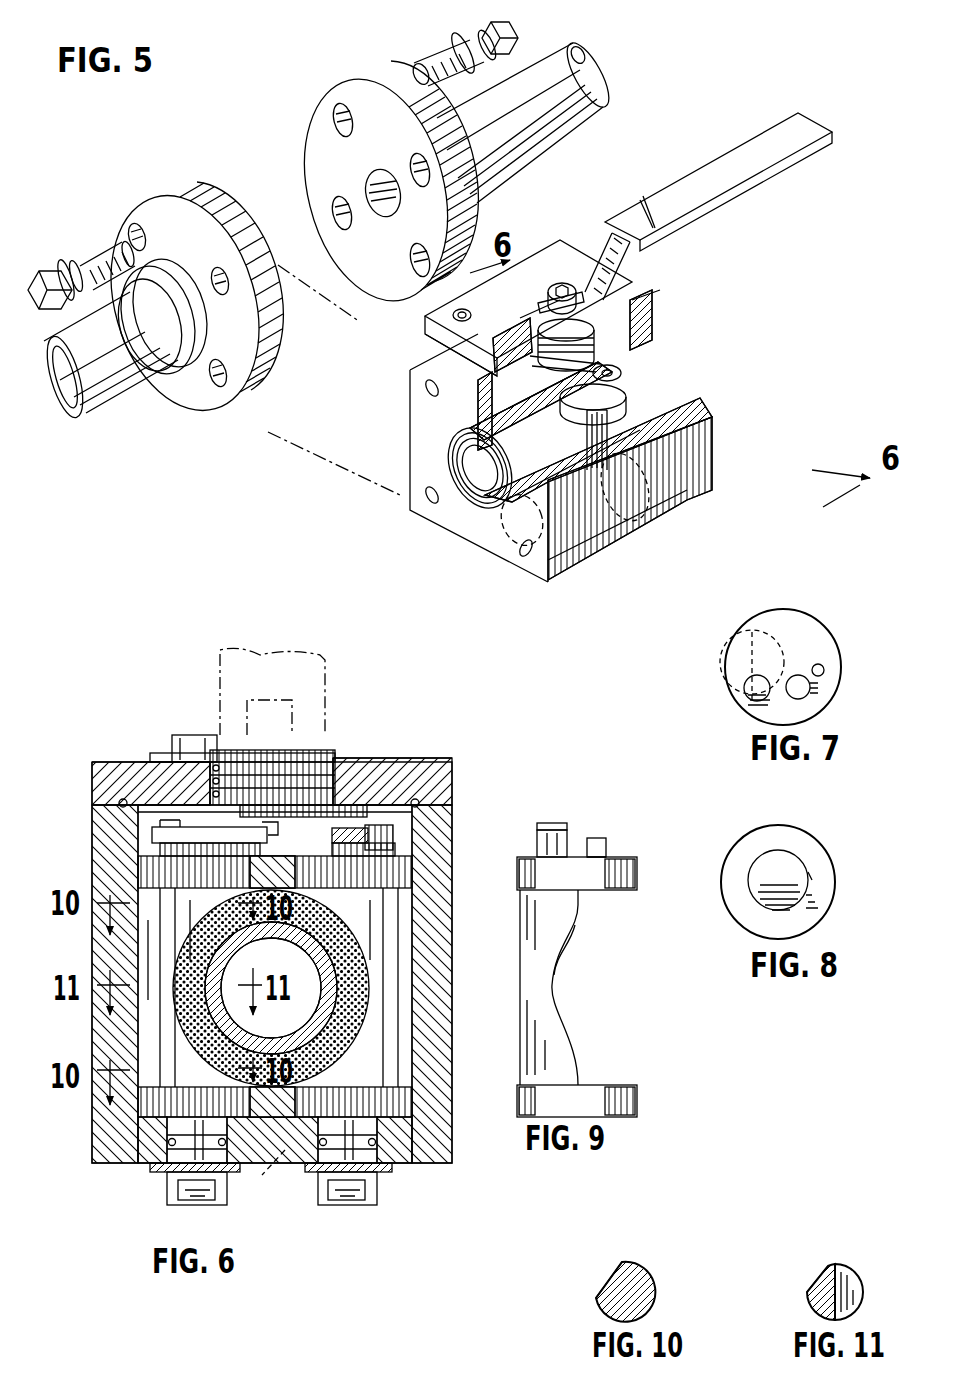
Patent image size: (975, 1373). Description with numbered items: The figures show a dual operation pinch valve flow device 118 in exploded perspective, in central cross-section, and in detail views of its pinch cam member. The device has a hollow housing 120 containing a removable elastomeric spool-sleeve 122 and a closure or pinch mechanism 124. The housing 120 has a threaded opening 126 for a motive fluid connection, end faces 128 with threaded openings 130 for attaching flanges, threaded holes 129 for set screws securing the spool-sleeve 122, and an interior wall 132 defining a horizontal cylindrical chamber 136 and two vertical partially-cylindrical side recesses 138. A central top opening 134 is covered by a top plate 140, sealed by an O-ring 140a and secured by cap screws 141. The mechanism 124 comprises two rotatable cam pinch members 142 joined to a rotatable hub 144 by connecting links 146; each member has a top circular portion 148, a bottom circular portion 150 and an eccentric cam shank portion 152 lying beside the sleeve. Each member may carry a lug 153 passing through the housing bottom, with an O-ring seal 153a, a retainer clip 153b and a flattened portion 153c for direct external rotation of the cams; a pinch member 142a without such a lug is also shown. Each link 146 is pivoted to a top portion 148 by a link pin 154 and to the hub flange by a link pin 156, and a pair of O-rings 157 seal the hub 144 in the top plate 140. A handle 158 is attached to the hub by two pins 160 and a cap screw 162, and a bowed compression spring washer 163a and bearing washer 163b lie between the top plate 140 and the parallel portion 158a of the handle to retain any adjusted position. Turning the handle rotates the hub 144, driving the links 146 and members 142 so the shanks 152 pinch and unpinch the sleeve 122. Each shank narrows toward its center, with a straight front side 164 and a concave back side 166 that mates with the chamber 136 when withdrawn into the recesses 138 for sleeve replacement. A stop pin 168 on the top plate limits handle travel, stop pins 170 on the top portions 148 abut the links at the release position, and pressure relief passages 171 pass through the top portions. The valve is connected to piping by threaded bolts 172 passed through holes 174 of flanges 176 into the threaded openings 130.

In FIG. 5, the pinch valve flow device 118 is at (420, 534).
In FIG. 5, the hollow housing 120 is at (408, 506).
In FIG. 5, the spool-sleeve 122 is at (475, 508).
In FIG. 5, the closure or pinch mechanism 124 is at (660, 400).
In FIG. 5, the threaded opening 126 is at (497, 547).
In FIG. 6, the threaded opening 126 is at (262, 1175).
In FIG. 5, the end faces 128 is at (440, 465).
In FIG. 5, the threaded holes 129 is at (470, 385).
In FIG. 5, the threaded openings 130 is at (427, 388).
In FIG. 5, the interior wall 132 is at (650, 427).
In FIG. 6, the interior wall 132 is at (205, 935).
In FIG. 6, the central top opening 134 is at (143, 793).
In FIG. 6, the cylindrical chamber 136 is at (185, 955).
In FIG. 5, the side recesses 138 is at (687, 437).
In FIG. 6, the side recesses 138 is at (147, 1008).
In FIG. 5, the top plate 140 is at (470, 318).
In FIG. 6, the top plate 140 is at (397, 767).
In FIG. 5, the O-ring 140a is at (447, 368).
In FIG. 6, the O-ring 140a is at (430, 812).
In FIG. 5, the cap screws 141 is at (460, 320).
In FIG. 5, the cam pinch members 142 is at (668, 490).
In FIG. 9, the pinch member 142a is at (600, 830).
In FIG. 5, the rotatable hub 144 is at (652, 300).
In FIG. 6, the rotatable hub 144 is at (187, 797).
In FIG. 5, the connecting links 146 is at (640, 356).
In FIG. 6, the connecting links 146 is at (163, 833).
In FIG. 5, the top circular portion 148 is at (640, 385).
In FIG. 6, the top circular portion 148 is at (400, 875).
In FIG. 7, the top circular portion 148 is at (836, 650).
In FIG. 9, the top circular portion 148 is at (637, 875).
In FIG. 5, the bottom circular portion 150 is at (656, 538).
In FIG. 6, the bottom circular portion 150 is at (407, 1105).
In FIG. 8, the bottom circular portion 150 is at (780, 828).
In FIG. 9, the bottom circular portion 150 is at (640, 1100).
In FIG. 5, the cam shank portion 152 is at (655, 455).
In FIG. 7, the cam shank portion 152 is at (728, 640).
In FIG. 9, the cam shank portion 152 is at (566, 1007).
In FIG. 10, the cam shank portion 152 is at (642, 1265).
In FIG. 11, the cam shank portion 152 is at (838, 1262).
In FIG. 6, the lug 153 is at (382, 1188).
In FIG. 8, the lug 153 is at (745, 868).
In FIG. 6, the O-ring seal 153a is at (380, 1140).
In FIG. 6, the retainer clip 153b is at (395, 1170).
In FIG. 6, the flattened portion 153c is at (357, 1197).
In FIG. 8, the flattened portion 153c is at (793, 853).
In FIG. 6, the link pin 154 is at (160, 848).
In FIG. 7, the link pin 154 is at (744, 690).
In FIG. 9, the link pin 154 is at (550, 822).
In FIG. 6, the link pin 156 is at (278, 825).
In FIG. 6, the O-rings 157 is at (333, 777).
In FIG. 5, the handle 158 is at (755, 137).
In FIG. 5, the parallel portion 158a is at (550, 288).
In FIG. 5, the pins 160 is at (626, 306).
In FIG. 5, the cap screw 162 is at (577, 277).
In FIG. 6, the bowed compression spring washer 163a is at (148, 760).
In FIG. 5, the bearing washer 163b is at (560, 285).
In FIG. 6, the bearing washer 163b is at (152, 752).
In FIG. 10, the front side 164 is at (593, 1287).
In FIG. 11, the front side 164 is at (800, 1288).
In FIG. 9, the back side 166 is at (560, 962).
In FIG. 11, the back side 166 is at (857, 1277).
In FIG. 5, the stop pin 168 is at (595, 287).
In FIG. 6, the stop pin 168 is at (183, 735).
In FIG. 7, the stop pins 170 is at (812, 688).
In FIG. 9, the stop pins 170 is at (607, 845).
In FIG. 7, the pressure relief passages 171 is at (826, 668).
In FIG. 5, the threaded bolts 172 is at (62, 283).
In FIG. 5, the holes 174 is at (130, 233).
In FIG. 5, the flanges 176 is at (173, 197).